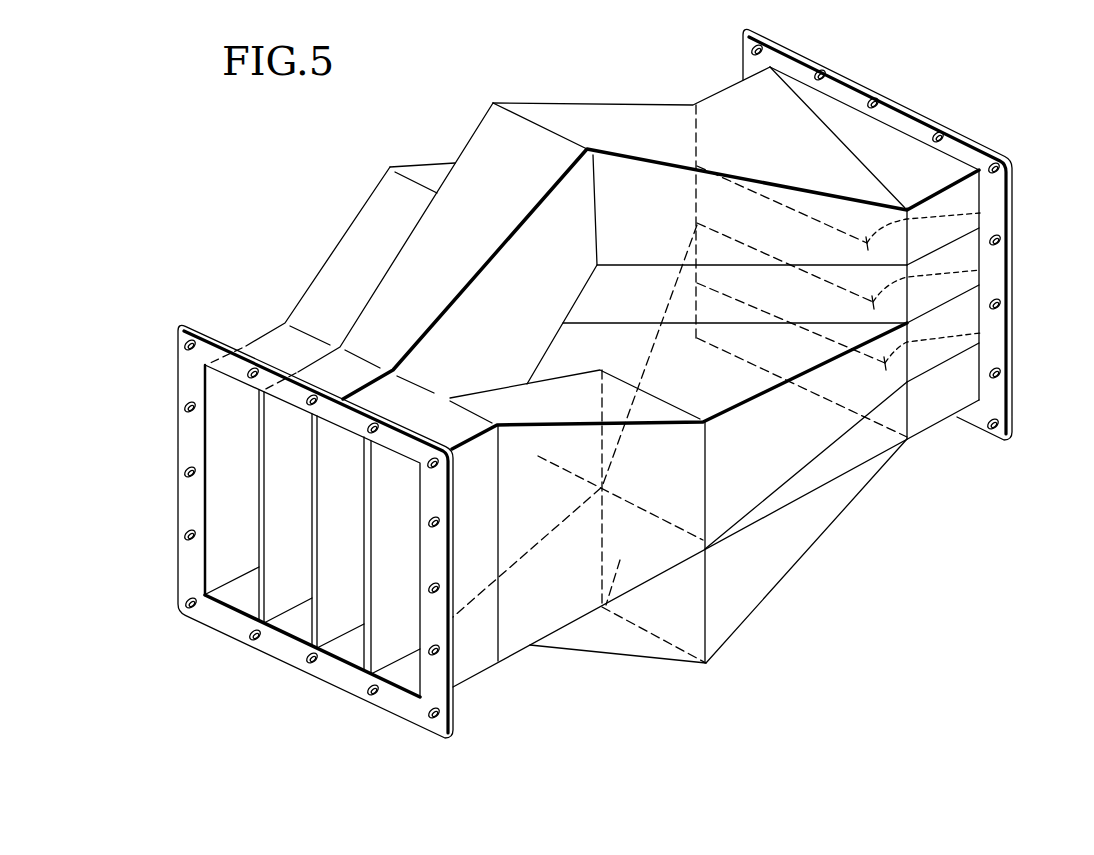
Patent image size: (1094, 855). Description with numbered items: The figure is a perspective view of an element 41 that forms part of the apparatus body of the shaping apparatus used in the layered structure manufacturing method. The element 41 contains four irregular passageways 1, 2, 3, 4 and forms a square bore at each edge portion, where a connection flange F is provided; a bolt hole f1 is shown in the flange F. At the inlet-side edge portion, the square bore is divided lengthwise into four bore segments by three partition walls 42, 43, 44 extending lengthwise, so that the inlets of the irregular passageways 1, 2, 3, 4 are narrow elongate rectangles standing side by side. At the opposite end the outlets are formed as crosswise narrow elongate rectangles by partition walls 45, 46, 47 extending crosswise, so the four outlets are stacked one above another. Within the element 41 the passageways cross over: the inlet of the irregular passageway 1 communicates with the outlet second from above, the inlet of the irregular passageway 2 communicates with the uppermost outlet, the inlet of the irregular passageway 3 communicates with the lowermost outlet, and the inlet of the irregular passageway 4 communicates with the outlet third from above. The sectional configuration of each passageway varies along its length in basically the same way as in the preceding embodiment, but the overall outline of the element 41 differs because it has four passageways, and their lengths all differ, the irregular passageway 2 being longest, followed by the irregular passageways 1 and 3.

The irregular passageway 1 is at (236, 561).
The irregular passageway 2 is at (304, 611).
The irregular passageway 3 is at (356, 639).
The irregular passageway 4 is at (408, 661).
The element 41 is at (628, 104).
The partition wall 42 is at (258, 604).
The partition wall 43 is at (312, 636).
The partition wall 44 is at (369, 665).
The partition wall 45 is at (980, 213).
The partition wall 46 is at (980, 270).
The partition wall 47 is at (980, 333).
The connection flange F is at (213, 338).
The bolt hole f1 is at (819, 72).